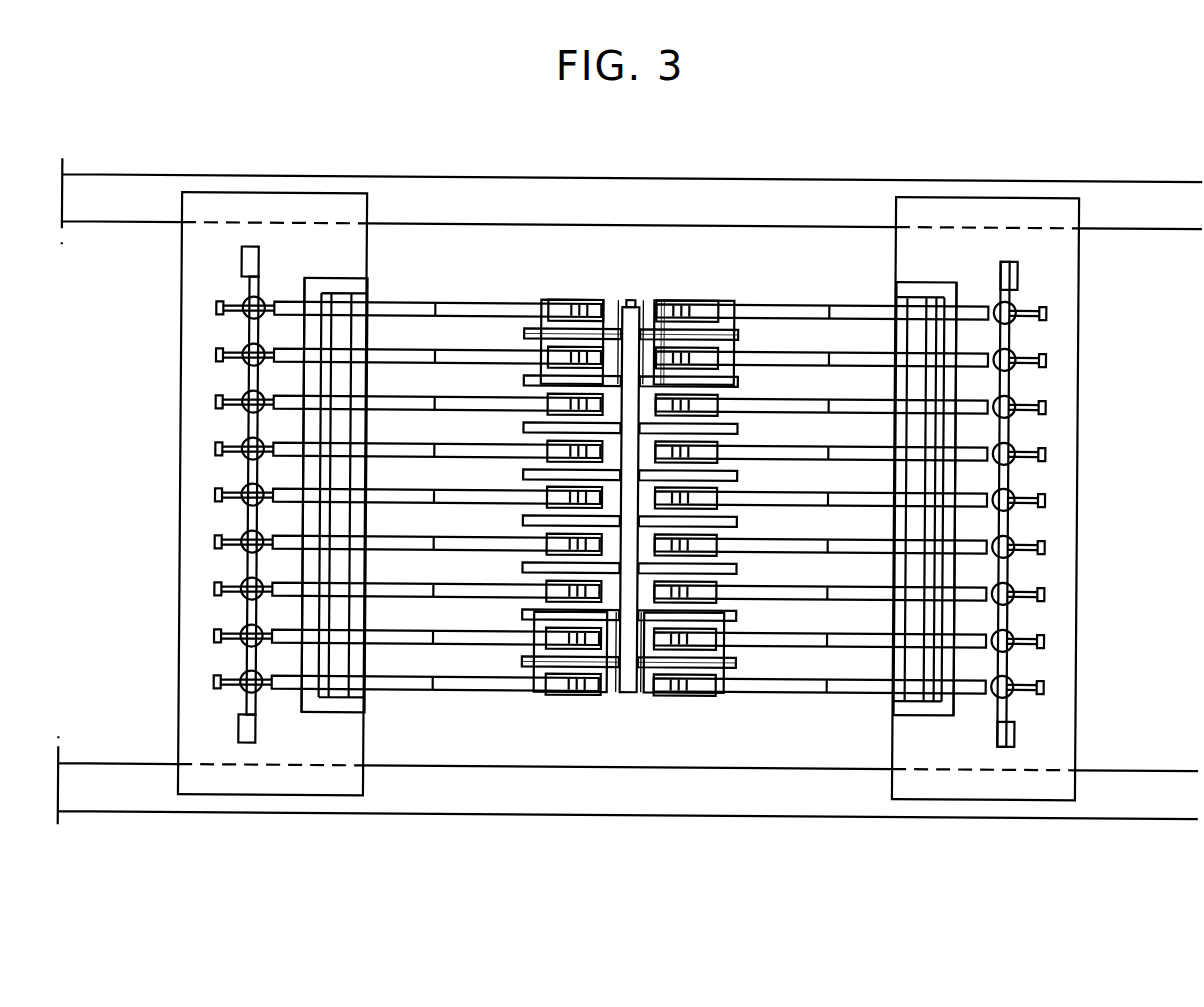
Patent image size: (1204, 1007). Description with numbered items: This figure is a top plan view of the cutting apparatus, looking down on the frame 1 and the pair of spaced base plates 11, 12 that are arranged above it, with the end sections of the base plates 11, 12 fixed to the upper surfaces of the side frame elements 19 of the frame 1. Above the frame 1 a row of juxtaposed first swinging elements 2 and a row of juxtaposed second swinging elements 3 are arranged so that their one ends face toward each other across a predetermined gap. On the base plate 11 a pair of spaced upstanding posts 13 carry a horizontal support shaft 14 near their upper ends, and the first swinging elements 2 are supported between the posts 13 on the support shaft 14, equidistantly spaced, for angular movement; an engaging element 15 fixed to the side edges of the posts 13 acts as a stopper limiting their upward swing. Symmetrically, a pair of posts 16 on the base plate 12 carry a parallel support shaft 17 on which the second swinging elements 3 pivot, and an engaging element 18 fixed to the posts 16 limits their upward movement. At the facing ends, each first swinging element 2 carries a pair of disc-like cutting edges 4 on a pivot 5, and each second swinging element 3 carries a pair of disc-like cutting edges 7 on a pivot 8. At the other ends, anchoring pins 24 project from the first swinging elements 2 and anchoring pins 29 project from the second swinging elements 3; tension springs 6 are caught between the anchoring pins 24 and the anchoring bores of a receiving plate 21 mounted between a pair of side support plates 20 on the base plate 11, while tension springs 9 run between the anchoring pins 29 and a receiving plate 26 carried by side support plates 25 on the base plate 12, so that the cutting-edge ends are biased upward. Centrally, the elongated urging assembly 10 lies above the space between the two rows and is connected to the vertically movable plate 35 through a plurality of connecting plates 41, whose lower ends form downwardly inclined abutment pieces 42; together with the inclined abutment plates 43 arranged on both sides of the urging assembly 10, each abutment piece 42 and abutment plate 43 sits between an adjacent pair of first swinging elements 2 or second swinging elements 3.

The frame 1 is at (862, 186).
The first swinging elements 2 is at (466, 494).
The second swinging elements 3 is at (872, 480).
The disc-like cutting edges 4 is at (561, 297).
The pivot 5 is at (572, 300).
The tension springs 6 is at (245, 300).
The disc-like cutting edges 7 is at (707, 297).
The pivot 8 is at (682, 300).
The tension springs 9 is at (1015, 305).
The urging assembly 10 is at (629, 694).
The base plate 11 is at (235, 783).
The base plate 12 is at (1035, 793).
The posts 13 is at (238, 493).
The support shaft 14 is at (335, 377).
The engaging element 15 is at (310, 522).
The posts 16 is at (1020, 507).
The support shaft 17 is at (925, 380).
The engaging element 18 is at (950, 522).
The side frame elements 19 is at (118, 196).
The side support plates 20 is at (240, 262).
The receiving plate 21 is at (246, 580).
The anchoring pins 24 is at (233, 312).
The side support plates 25 is at (1017, 272).
The receiving plate 26 is at (1010, 572).
The anchoring pins 29 is at (1033, 322).
The movable plate 35 is at (641, 306).
The connecting plates 41 is at (618, 300).
The abutment pieces 42 is at (523, 330).
The abutment plates 43 is at (503, 468).